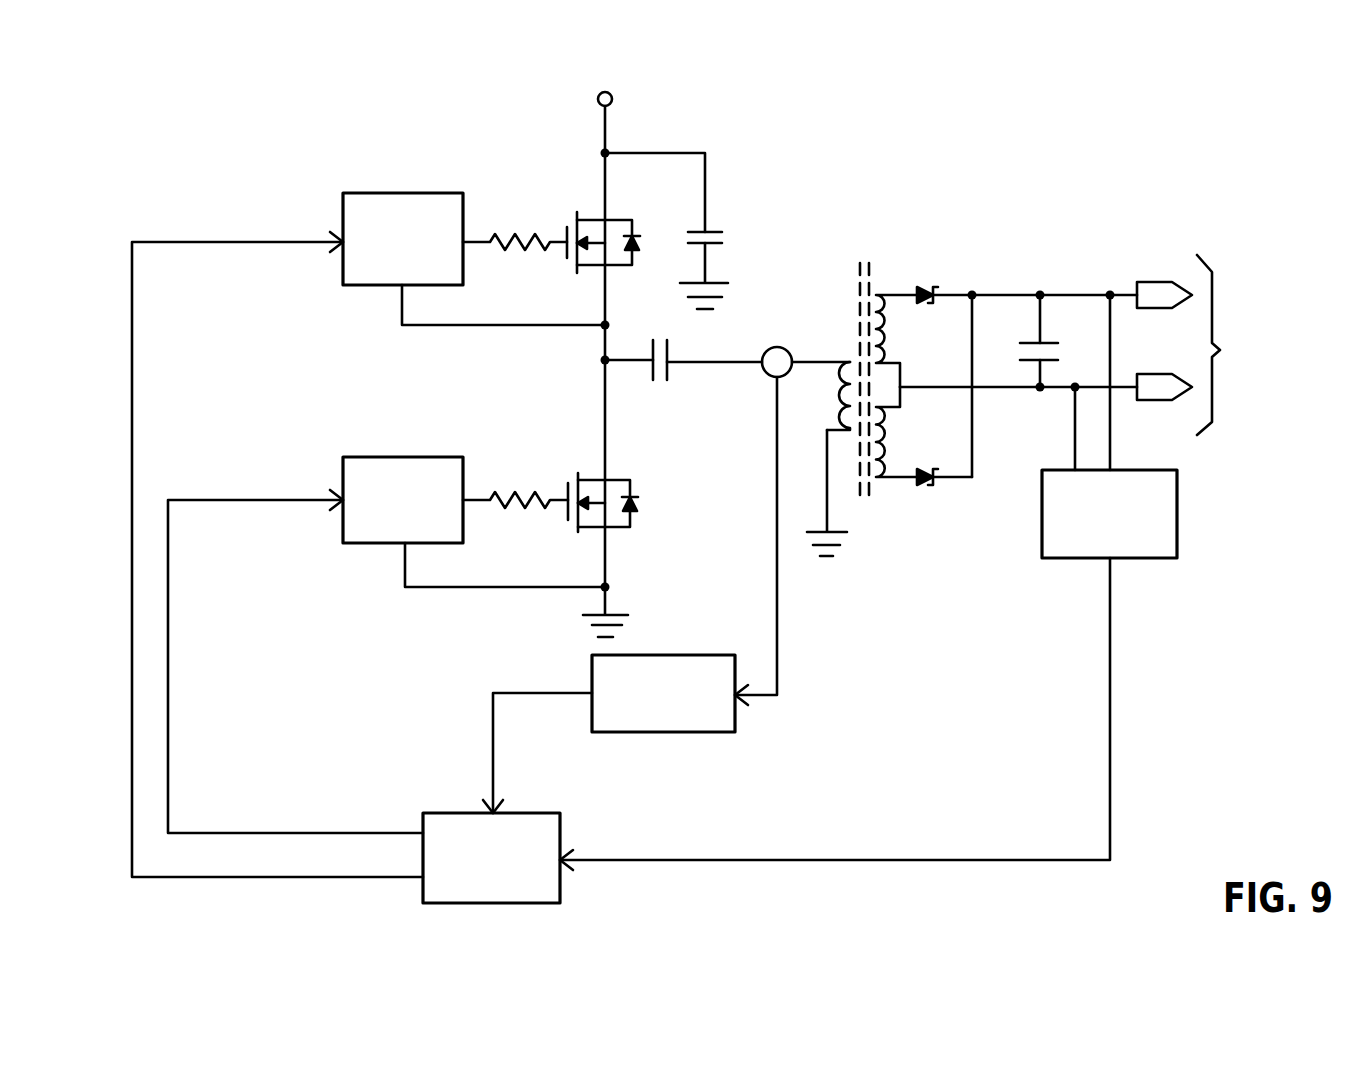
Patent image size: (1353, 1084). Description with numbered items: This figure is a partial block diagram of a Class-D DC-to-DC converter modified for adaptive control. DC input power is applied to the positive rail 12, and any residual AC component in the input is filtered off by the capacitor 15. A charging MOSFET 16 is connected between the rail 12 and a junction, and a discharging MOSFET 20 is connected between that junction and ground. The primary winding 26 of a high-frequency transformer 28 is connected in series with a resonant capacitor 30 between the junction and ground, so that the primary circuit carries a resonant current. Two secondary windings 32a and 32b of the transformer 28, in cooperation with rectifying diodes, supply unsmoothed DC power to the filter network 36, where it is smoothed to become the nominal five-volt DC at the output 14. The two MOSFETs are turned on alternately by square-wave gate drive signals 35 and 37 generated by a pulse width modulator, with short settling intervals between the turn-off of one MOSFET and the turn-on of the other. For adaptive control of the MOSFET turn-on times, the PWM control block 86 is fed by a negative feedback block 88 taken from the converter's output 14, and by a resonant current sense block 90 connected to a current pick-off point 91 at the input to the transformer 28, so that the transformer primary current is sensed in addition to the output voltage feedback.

The positive rail 12 is at (612, 101).
The output 14 is at (1196, 345).
The capacitor 15 is at (713, 230).
The charging MOSFET 16 is at (588, 216).
The discharging MOSFET 20 is at (595, 476).
The primary winding 26 is at (842, 392).
The high-frequency transformer 28 is at (878, 349).
The resonant capacitor 30 is at (670, 368).
The secondary winding 32a is at (886, 332).
The secondary winding 32b is at (887, 447).
The square-wave signal 35 is at (403, 193).
The filter network 36 is at (1048, 340).
The square-wave signal 37 is at (403, 457).
The PWM control block 86 is at (445, 897).
The negative feedback block 88 is at (1070, 556).
The resonant current sense block 90 is at (658, 733).
The current pick-off point 91 is at (780, 347).